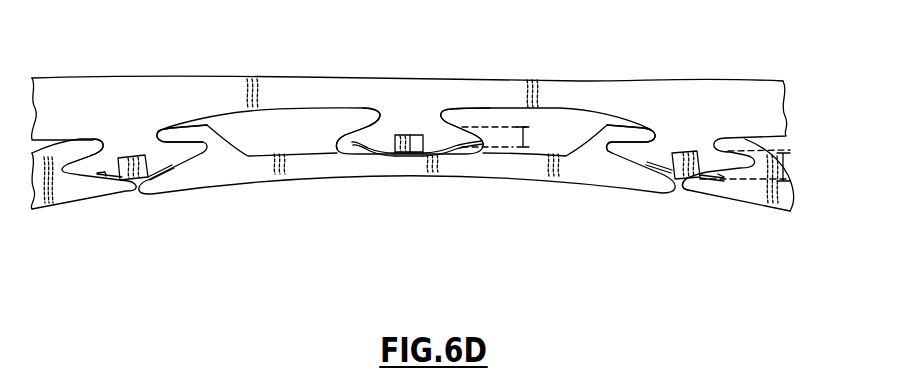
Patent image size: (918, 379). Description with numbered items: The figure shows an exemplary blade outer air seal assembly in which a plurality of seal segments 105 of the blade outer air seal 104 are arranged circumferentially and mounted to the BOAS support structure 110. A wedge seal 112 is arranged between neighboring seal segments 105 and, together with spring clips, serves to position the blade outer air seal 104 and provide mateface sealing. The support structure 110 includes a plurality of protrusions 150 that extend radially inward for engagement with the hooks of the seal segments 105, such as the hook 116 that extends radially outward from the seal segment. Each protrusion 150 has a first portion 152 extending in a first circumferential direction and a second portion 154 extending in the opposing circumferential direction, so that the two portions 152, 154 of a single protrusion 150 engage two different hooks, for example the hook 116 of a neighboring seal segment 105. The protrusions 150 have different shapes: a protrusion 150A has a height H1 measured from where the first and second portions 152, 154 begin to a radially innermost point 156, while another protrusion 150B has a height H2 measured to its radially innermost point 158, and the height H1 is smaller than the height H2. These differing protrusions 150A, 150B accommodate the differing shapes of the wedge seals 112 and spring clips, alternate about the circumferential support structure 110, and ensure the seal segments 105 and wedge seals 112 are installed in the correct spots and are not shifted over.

The blade outer air seal 104 is at (91, 200).
The seal segment 105 is at (123, 196).
The BOAS support structure 110 is at (470, 92).
The wedge seal 112 is at (673, 175).
The hook 116 is at (405, 152).
The protrusion 150 is at (167, 153).
The protrusion 150A is at (433, 135).
The protrusion 150B is at (648, 153).
The first portion 152 is at (362, 140).
The second portion 154 is at (462, 140).
The radially innermost point 156 is at (447, 148).
The radially innermost point 158 is at (690, 183).
The height H1 is at (527, 134).
The height H2 is at (788, 165).